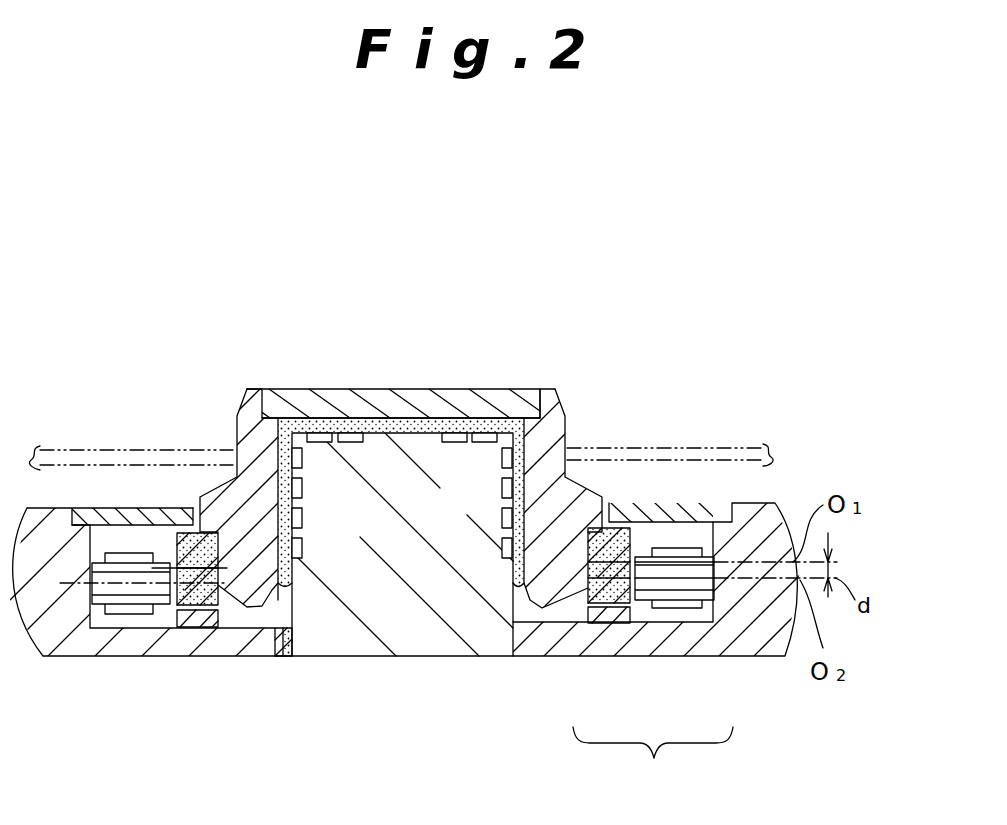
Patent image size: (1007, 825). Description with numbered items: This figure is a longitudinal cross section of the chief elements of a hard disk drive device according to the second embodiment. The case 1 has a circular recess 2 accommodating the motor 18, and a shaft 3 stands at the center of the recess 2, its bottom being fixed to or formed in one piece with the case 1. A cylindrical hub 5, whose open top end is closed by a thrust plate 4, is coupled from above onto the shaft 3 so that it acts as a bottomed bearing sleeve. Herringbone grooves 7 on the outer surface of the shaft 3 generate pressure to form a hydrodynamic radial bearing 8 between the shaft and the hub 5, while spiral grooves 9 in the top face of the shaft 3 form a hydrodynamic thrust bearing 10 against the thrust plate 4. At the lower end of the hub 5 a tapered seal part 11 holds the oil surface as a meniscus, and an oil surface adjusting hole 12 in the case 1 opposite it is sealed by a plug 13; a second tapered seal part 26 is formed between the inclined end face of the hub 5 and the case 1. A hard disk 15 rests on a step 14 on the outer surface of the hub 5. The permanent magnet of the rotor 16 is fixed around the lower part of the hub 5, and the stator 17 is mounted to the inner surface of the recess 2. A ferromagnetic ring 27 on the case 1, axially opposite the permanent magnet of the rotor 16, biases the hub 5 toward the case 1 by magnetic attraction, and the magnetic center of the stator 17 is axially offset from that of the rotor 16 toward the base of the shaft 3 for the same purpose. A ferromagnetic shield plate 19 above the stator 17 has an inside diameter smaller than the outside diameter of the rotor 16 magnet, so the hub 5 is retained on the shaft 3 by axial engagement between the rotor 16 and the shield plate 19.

The case 1 is at (62, 633).
The circular recess 2 is at (160, 618).
The shaft 3 is at (428, 628).
The thrust plate 4 is at (438, 405).
The cylindrical hub 5 is at (247, 432).
The herringbone grooves 7 is at (302, 548).
The hydrodynamic radial bearing 8 is at (521, 457).
The spiral grooves 9 is at (479, 443).
The hydrodynamic thrust bearing 10 is at (468, 428).
The tapered seal part 11 is at (283, 600).
The oil surface adjusting hole 12 is at (268, 657).
The plug 13 is at (285, 657).
The step 14 is at (232, 468).
The hard disk 15 is at (128, 452).
The rotor 16 is at (605, 590).
The stator 17 is at (682, 582).
The motor 18 is at (653, 765).
The shield plate 19 is at (681, 512).
The second tapered seal part 26 is at (233, 617).
The ferromagnetic ring 27 is at (196, 623).